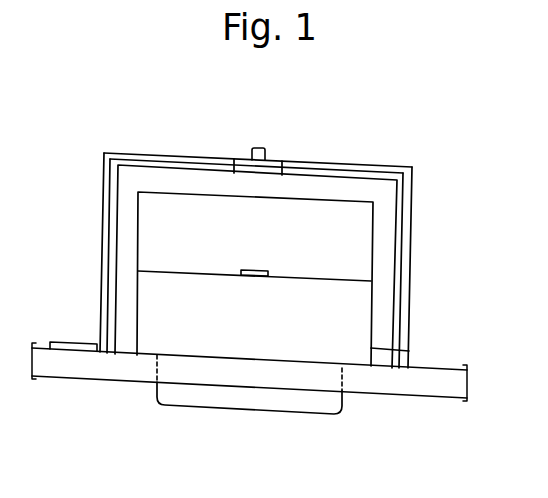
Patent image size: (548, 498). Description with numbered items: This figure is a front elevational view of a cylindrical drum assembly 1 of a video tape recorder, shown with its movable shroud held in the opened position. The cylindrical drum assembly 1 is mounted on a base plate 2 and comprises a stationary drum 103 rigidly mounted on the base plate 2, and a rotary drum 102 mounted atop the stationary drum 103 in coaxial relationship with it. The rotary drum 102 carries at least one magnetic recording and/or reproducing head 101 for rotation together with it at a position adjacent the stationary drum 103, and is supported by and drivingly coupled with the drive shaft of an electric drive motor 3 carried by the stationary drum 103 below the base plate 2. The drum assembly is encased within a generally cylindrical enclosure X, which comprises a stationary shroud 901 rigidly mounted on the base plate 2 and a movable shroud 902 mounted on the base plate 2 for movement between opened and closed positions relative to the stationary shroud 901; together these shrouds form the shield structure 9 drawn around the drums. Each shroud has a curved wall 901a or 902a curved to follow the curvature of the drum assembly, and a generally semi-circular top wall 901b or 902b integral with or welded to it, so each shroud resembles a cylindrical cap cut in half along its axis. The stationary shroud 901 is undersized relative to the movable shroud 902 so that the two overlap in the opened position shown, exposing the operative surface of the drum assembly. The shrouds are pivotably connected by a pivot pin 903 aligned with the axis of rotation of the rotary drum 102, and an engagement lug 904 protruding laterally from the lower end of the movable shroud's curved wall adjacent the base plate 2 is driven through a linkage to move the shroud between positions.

The cylindrical drum assembly 1 is at (373, 218).
The base plate 2 is at (439, 398).
The electric drive motor 3 is at (306, 415).
The shield case 9 is at (160, 153).
The magnetic recording and/or reproducing head 101 is at (264, 270).
The rotary drum 102 is at (364, 202).
The stationary drum 103 is at (409, 351).
The stationary shroud 901 is at (110, 215).
The curved wall 901a is at (394, 318).
The semi-circular top wall 901b is at (133, 165).
The movable shroud 902 is at (103, 153).
The curved wall 902a is at (410, 282).
The semi-circular top wall 902b is at (192, 160).
The pivot pin 903 is at (259, 148).
The engagement lug 904 is at (65, 341).
The enclosure X is at (412, 249).